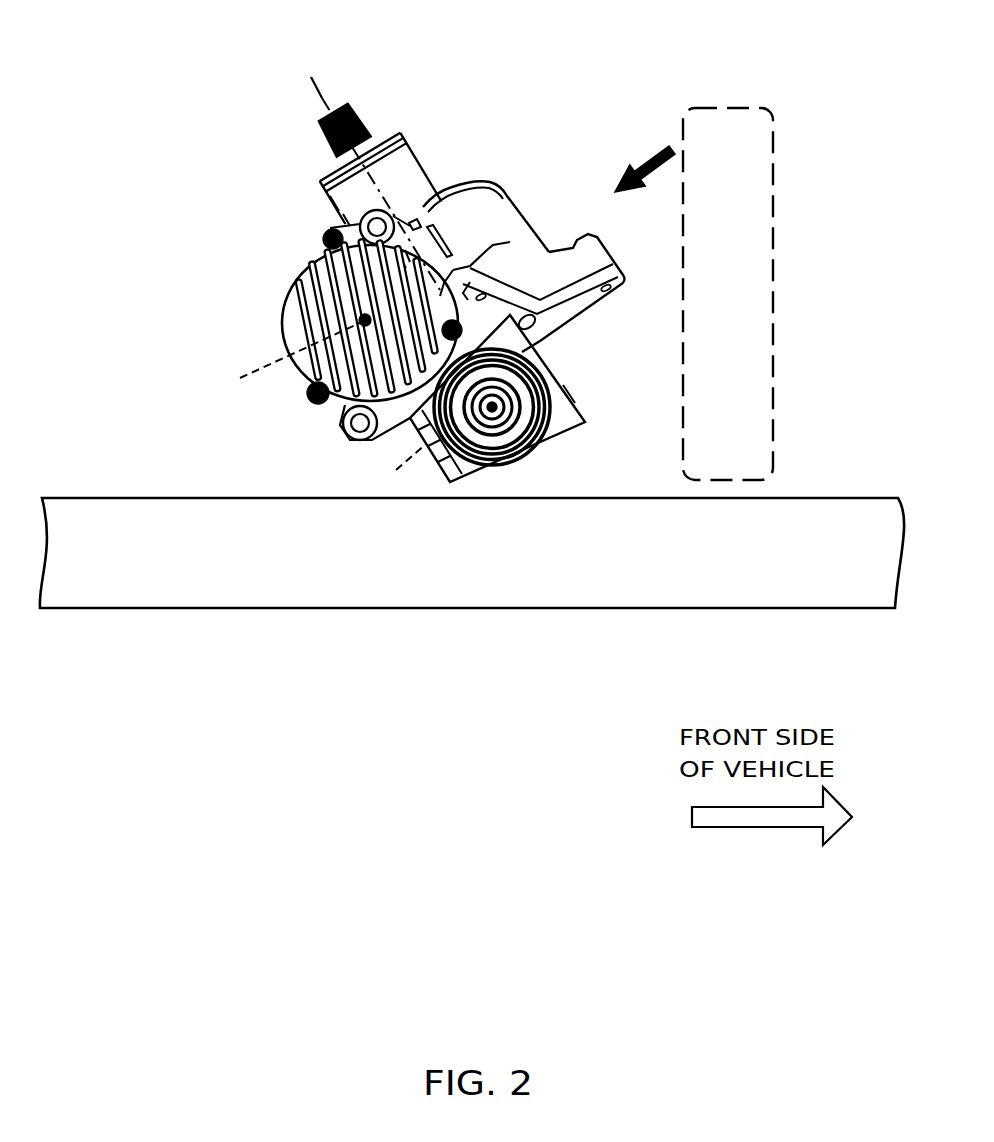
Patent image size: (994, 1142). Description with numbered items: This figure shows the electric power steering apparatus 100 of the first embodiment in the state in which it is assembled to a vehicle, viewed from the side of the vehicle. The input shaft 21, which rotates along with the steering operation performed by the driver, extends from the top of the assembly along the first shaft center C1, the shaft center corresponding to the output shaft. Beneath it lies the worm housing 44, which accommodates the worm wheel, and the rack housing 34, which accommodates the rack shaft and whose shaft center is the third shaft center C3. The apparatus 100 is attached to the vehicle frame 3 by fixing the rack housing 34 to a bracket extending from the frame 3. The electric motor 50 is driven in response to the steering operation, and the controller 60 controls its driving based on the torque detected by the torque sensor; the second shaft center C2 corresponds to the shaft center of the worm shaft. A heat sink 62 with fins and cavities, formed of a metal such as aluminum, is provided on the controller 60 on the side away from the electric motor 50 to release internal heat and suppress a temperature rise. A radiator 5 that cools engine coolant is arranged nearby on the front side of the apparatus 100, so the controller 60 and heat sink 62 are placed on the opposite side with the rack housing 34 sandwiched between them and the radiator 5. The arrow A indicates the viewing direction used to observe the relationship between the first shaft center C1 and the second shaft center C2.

The electric power steering apparatus 100 is at (626, 80).
The input shaft 21 is at (323, 128).
The worm housing 44 is at (505, 213).
The rack housing 34 is at (552, 388).
The electric motor 50 is at (285, 291).
The controller 60 is at (372, 325).
The heat sink 62 is at (300, 310).
The radiator 5 is at (750, 272).
The vehicle frame 3 is at (441, 590).
The first shaft center C1 is at (319, 78).
The second shaft center C2 is at (289, 355).
The third shaft center C3 is at (394, 468).
The arrow A is at (645, 160).